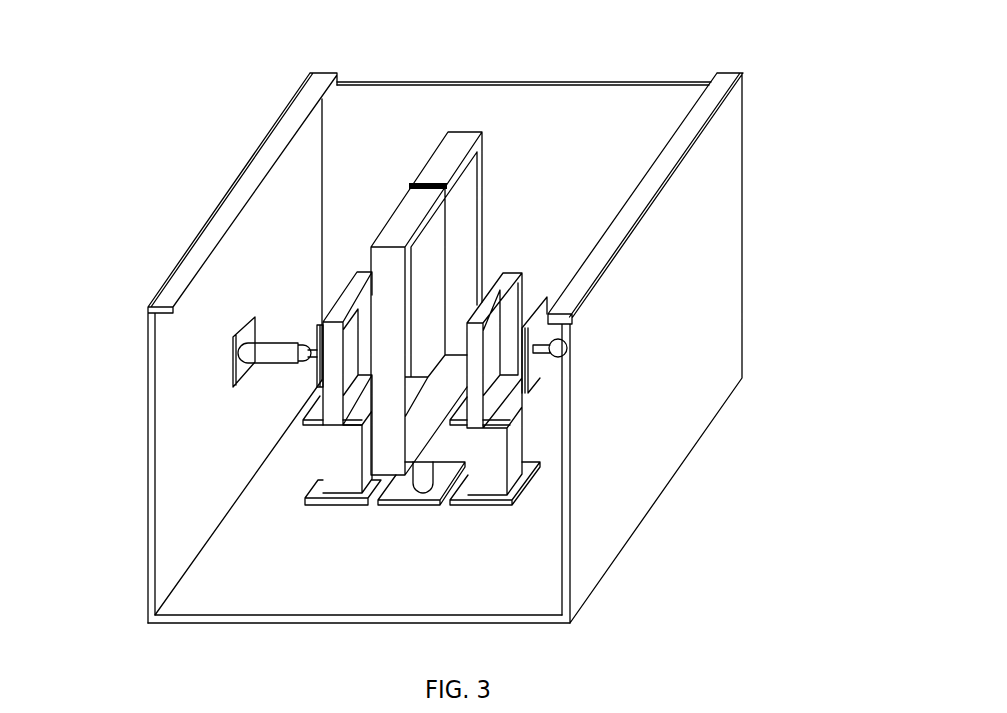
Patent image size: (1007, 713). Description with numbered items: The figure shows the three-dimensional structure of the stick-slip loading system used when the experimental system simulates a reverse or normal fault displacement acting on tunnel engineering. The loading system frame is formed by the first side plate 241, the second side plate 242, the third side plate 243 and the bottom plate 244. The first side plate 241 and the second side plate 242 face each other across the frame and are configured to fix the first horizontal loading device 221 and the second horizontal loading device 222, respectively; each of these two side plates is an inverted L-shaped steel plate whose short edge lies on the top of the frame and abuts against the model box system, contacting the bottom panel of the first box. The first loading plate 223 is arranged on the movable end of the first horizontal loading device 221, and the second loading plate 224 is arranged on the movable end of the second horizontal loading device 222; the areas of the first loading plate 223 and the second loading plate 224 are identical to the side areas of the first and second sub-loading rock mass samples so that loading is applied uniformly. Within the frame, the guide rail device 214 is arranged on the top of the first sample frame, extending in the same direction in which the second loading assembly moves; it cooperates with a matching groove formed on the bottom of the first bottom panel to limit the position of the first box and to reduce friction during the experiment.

The guide rail device 214 is at (423, 186).
The first horizontal loading device 221 is at (273, 355).
The second horizontal loading device 222 is at (562, 355).
The first loading plate 223 is at (315, 363).
The second loading plate 224 is at (535, 331).
The first side plate 241 is at (183, 377).
The second side plate 242 is at (658, 332).
The third side plate 243 is at (555, 128).
The bottom plate 244 is at (312, 580).